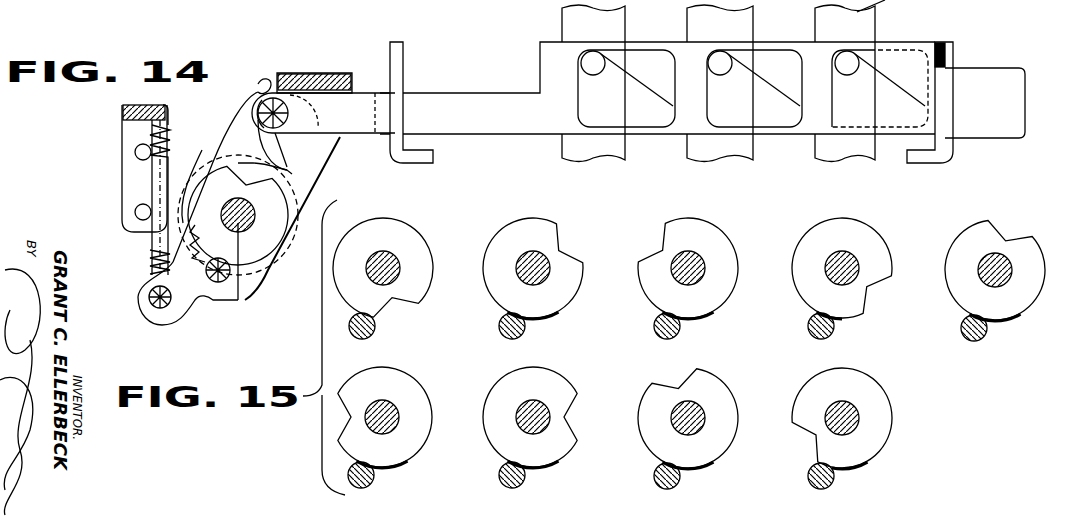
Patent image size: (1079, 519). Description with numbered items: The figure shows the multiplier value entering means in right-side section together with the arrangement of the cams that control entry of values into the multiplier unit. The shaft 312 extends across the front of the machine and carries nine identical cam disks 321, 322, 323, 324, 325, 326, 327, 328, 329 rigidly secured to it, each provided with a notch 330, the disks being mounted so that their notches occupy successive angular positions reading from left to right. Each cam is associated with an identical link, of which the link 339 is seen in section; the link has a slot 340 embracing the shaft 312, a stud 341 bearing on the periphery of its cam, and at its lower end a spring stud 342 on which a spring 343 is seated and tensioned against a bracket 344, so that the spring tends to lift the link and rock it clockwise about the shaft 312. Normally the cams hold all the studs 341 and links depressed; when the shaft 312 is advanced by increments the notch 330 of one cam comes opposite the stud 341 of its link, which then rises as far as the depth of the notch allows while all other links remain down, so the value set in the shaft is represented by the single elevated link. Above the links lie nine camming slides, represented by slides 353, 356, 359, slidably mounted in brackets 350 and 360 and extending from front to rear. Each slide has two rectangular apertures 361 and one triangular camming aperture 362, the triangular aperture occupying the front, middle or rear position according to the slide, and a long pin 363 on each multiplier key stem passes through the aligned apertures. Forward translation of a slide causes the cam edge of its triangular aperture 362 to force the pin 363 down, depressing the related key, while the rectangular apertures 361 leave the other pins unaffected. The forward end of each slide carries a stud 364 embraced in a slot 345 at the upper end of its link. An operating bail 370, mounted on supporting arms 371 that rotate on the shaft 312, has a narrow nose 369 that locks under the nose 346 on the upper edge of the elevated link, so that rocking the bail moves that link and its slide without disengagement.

In FIG. 14, the shaft 312 is at (243, 207).
In FIG. 15, the shaft 312 is at (390, 268).
In FIG. 15, the cam disk 321 is at (389, 238).
In FIG. 15, the cam disk 322 is at (845, 236).
In FIG. 15, the cam disk 323 is at (540, 382).
In FIG. 15, the cam disk 324 is at (540, 238).
In FIG. 15, the cam disk 325 is at (988, 238).
In FIG. 15, the cam disk 326 is at (697, 382).
In FIG. 15, the cam disk 327 is at (695, 232).
In FIG. 15, the cam disk 328 is at (387, 382).
In FIG. 14, the cam disk 329 is at (278, 205).
In FIG. 15, the cam disk 329 is at (848, 386).
In FIG. 14, the notch 330 is at (190, 253).
In FIG. 15, the notch 330 is at (392, 300).
In FIG. 14, the link 339 is at (252, 155).
In FIG. 14, the slot 340 is at (238, 303).
In FIG. 14, the stud 341 is at (214, 284).
In FIG. 15, the stud 341 is at (357, 334).
In FIG. 14, the spring stud 342 is at (148, 297).
In FIG. 14, the spring 343 is at (168, 153).
In FIG. 14, the bracket 344 is at (122, 112).
In FIG. 14, the slot 345 is at (289, 171).
In FIG. 14, the nose 346 is at (259, 84).
In FIG. 14, the bracket 350 is at (398, 64).
In FIG. 14, the camming slide 353 is at (647, 63).
In FIG. 14, the camming slide 356 is at (773, 65).
In FIG. 14, the camming slide 359 is at (990, 88).
In FIG. 14, the bracket 360 is at (922, 162).
In FIG. 14, the rectangular aperture 361 is at (580, 108).
In FIG. 14, the triangular camming aperture 362 is at (882, 78).
In FIG. 14, the pin 363 is at (849, 70).
In FIG. 14, the stud 364 is at (283, 112).
In FIG. 14, the nose 369 is at (283, 75).
In FIG. 14, the operating bail 370 is at (312, 75).
In FIG. 14, the supporting arm 371 is at (333, 148).